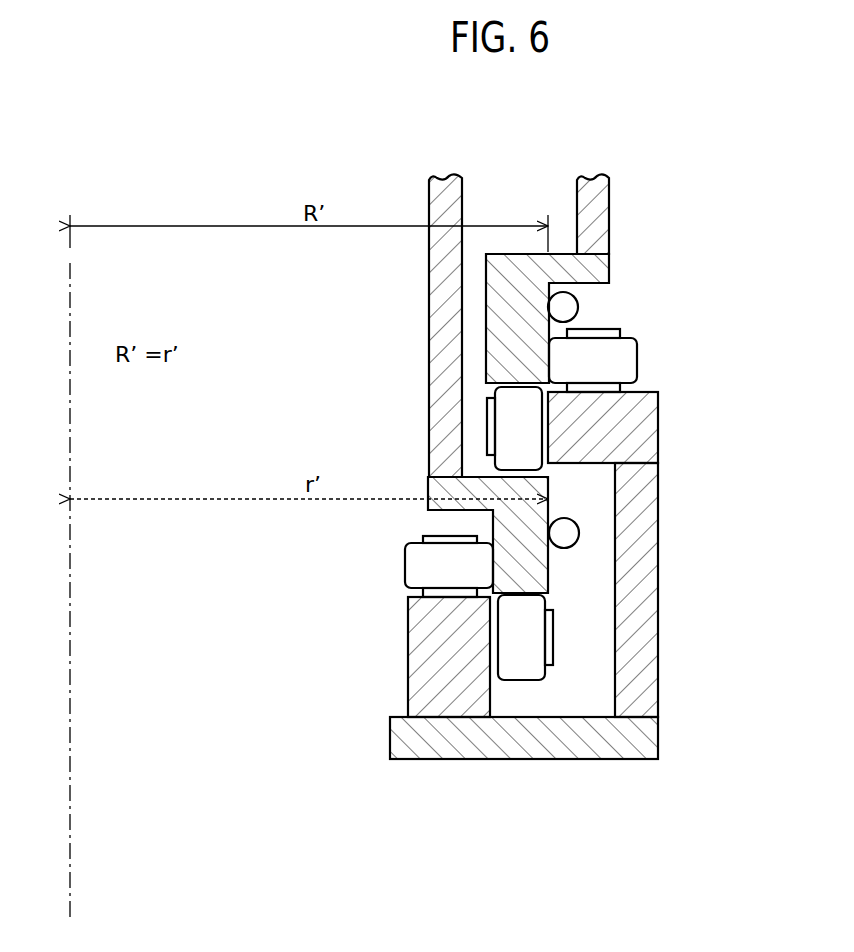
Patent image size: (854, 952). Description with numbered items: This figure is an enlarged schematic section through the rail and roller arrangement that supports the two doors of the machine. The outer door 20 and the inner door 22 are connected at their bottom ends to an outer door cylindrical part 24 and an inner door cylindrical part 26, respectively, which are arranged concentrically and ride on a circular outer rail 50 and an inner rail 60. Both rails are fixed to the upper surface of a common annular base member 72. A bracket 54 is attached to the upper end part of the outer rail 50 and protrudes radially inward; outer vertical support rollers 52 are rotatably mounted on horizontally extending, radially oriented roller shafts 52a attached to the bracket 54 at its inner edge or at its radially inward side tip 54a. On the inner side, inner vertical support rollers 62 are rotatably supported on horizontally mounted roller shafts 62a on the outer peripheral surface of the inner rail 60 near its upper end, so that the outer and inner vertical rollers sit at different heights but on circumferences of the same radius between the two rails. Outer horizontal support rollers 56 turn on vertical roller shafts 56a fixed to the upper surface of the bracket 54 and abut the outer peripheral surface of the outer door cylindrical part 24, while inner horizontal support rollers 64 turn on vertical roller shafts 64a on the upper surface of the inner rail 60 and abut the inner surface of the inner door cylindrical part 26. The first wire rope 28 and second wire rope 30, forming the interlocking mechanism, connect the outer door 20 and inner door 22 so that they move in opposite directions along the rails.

The outer door 20 is at (600, 213).
The inner door 22 is at (432, 315).
The outer door cylindrical part 24 is at (590, 270).
The inner door cylindrical part 26 is at (522, 567).
The first wire rope 28 is at (563, 307).
The second wire rope 30 is at (564, 533).
The outer rail 50 is at (648, 655).
The outer vertical support roller 52 is at (518, 435).
The roller shaft 52a is at (492, 413).
The bracket 54 is at (647, 433).
The radially inward side tip 54a is at (543, 455).
The outer horizontal support roller 56 is at (615, 362).
The roller shaft 56a is at (627, 329).
The inner rail 60 is at (423, 690).
The inner vertical support roller 62 is at (522, 667).
The roller shaft 62a is at (550, 645).
The inner horizontal support roller 64 is at (420, 572).
The roller shaft 64a is at (438, 540).
The annular base member 72 is at (638, 735).